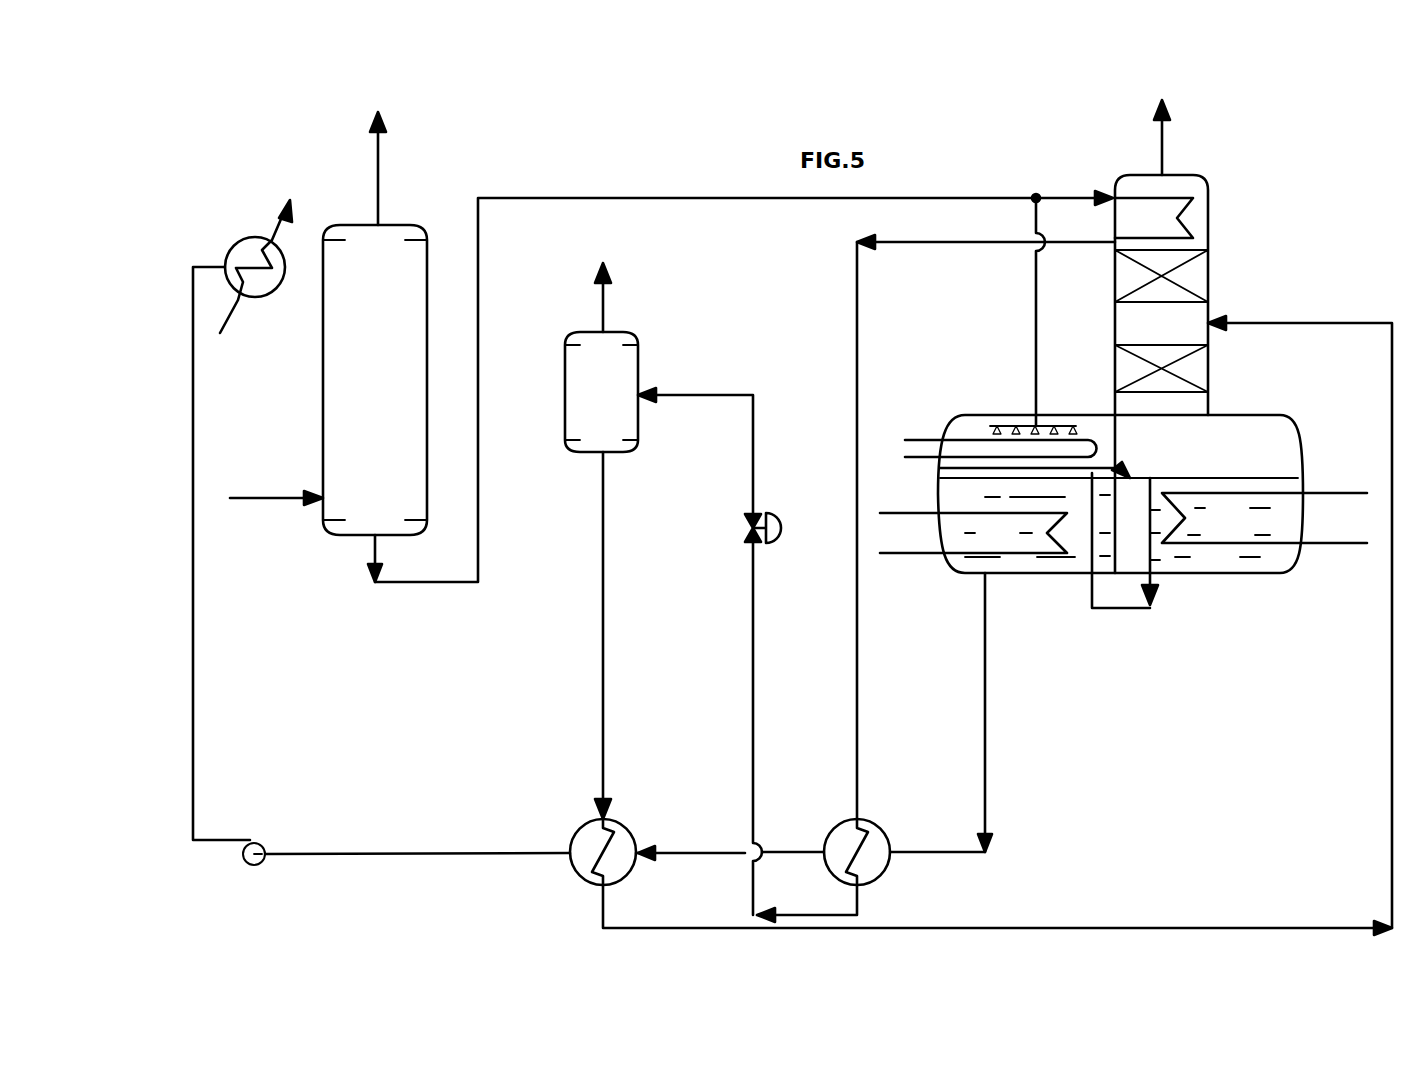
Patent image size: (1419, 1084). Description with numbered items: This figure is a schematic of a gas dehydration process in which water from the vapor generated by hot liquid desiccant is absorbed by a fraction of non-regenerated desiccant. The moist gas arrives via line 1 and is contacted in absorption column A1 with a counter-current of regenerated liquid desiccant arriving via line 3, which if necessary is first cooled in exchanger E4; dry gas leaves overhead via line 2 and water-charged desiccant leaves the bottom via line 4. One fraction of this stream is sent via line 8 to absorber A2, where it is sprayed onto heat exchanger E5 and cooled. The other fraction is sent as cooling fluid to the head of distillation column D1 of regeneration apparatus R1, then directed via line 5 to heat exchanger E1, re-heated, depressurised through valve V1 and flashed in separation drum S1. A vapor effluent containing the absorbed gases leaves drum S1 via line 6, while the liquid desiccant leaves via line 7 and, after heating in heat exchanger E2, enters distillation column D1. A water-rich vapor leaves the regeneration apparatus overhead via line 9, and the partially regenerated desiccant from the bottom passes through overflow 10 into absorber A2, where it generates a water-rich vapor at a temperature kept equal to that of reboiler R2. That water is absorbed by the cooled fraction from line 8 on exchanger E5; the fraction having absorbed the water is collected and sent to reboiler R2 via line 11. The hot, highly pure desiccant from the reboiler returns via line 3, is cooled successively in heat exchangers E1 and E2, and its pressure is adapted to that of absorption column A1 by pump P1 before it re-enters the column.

The line 1 is at (242, 500).
The line 2 is at (378, 156).
The line 3 is at (193, 592).
The line 4 is at (460, 584).
The line 5 is at (968, 248).
The line 6 is at (603, 295).
The line 7 is at (603, 588).
The line 8 is at (1036, 296).
The line 9 is at (1162, 135).
The overflow 10 is at (1140, 612).
The line 11 is at (958, 470).
The exchanger E4 is at (256, 266).
The absorption column A1 is at (375, 380).
The flash separation drum S1 is at (601, 392).
The valve V1 is at (750, 528).
The heat exchanger E2 is at (609, 846).
The heat exchanger E1 is at (863, 847).
The pump P1 is at (254, 842).
The regeneration apparatus R1 is at (1240, 225).
The distillation column D1 is at (1161, 321).
The absorber A2 is at (1091, 494).
The reboiler R2 is at (1258, 526).
The heat exchanger E5 is at (1094, 427).